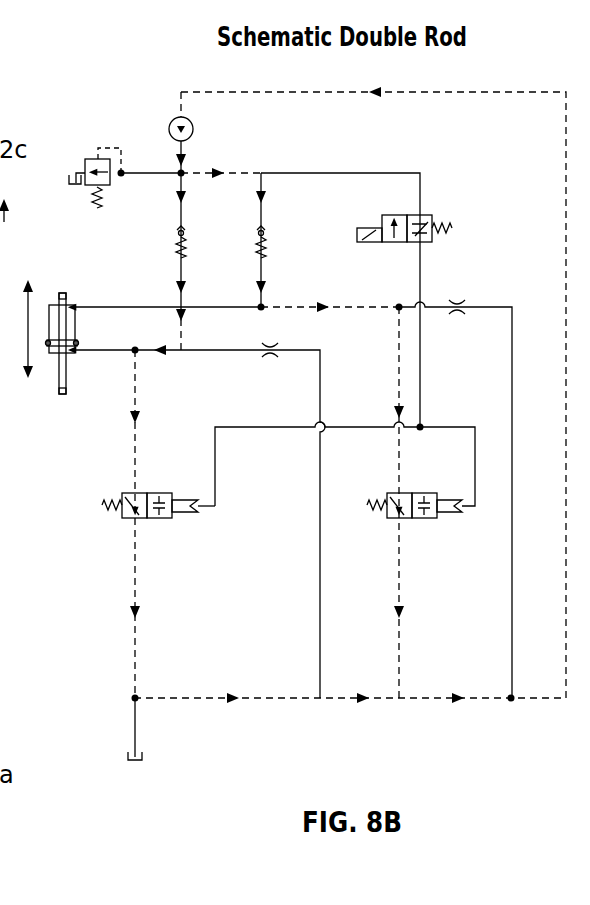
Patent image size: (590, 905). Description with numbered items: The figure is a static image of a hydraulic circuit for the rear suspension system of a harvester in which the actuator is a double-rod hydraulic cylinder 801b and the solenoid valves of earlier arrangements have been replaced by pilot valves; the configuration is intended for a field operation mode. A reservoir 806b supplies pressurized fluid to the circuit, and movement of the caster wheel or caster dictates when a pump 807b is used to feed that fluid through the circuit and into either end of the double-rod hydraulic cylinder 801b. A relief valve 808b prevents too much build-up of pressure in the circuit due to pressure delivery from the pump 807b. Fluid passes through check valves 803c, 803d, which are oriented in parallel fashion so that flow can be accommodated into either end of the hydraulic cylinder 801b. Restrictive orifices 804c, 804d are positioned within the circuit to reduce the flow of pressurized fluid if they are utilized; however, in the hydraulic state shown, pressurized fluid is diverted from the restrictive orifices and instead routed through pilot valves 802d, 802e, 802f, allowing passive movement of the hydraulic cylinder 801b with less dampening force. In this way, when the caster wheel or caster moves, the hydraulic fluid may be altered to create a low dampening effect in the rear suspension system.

The pump 807b is at (169, 129).
The relief valve 808b is at (114, 188).
The reservoir 806b is at (68, 187).
The check valve 803c is at (197, 246).
The check valve 803d is at (277, 246).
The pilot valve 802f is at (453, 227).
The pilot valve 802d is at (163, 492).
The pilot valve 802e is at (418, 492).
The restrictive orifice 804c is at (267, 358).
The restrictive orifice 804d is at (455, 315).
The double-rod hydraulic cylinder 801b is at (53, 355).